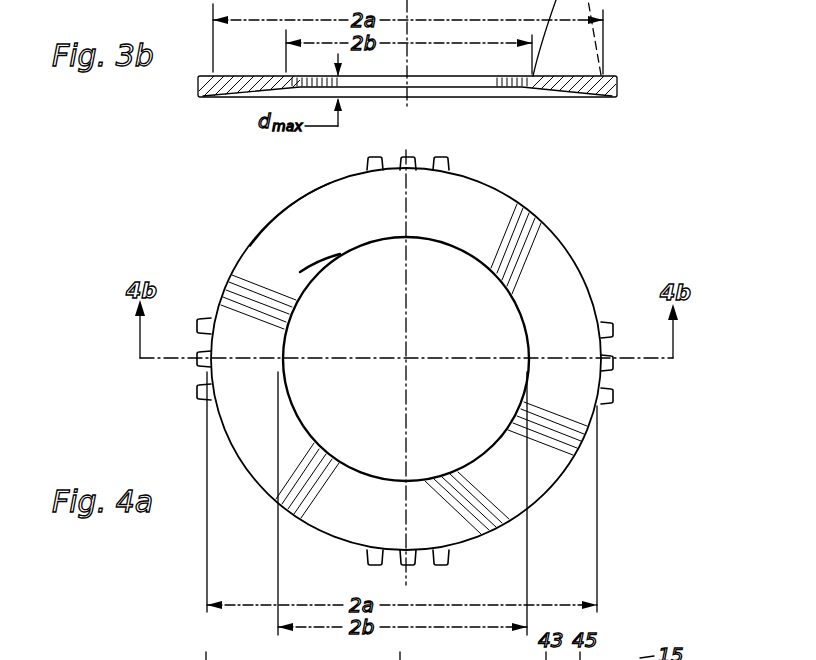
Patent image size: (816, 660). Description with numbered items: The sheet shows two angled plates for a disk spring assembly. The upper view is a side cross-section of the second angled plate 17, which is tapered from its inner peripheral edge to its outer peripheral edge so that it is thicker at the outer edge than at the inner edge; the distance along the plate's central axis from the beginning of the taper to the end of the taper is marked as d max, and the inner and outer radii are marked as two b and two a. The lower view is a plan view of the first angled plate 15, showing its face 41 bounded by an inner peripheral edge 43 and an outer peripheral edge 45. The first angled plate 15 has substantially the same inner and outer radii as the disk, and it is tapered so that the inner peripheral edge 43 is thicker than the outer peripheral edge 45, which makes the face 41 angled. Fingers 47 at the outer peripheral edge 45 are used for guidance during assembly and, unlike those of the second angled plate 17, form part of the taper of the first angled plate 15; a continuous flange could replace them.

In FIG. 4a, the first angled plate 15 is at (589, 247).
In FIG. 3b, the second angled plate 17 is at (616, 69).
In FIG. 4a, the face 41 is at (493, 217).
In FIG. 4a, the inner peripheral edge 43 is at (310, 280).
In FIG. 4a, the outer peripheral edge 45 is at (291, 200).
In FIG. 4a, the fingers 47 is at (373, 157).